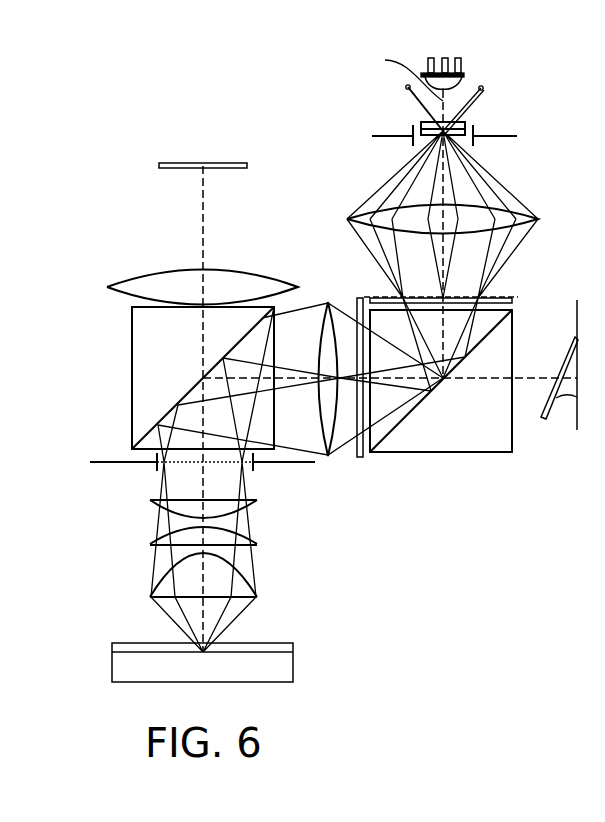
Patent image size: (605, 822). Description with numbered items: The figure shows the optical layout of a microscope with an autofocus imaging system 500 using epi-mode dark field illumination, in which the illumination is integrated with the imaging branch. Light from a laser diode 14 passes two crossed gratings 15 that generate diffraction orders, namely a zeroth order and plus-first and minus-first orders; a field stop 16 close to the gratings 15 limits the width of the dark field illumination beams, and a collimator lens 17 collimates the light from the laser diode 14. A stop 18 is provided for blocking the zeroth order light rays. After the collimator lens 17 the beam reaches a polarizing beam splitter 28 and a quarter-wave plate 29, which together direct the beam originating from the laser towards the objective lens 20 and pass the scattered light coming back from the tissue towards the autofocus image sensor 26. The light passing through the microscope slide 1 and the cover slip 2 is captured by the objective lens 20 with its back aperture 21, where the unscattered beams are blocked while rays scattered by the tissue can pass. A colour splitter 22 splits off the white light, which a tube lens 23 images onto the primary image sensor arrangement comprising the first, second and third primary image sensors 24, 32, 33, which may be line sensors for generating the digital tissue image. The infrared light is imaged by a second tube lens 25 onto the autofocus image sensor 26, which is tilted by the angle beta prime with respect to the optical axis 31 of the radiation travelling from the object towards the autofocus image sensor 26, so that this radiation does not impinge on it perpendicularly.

The microscope slide 1 is at (175, 672).
The cover slip 2 is at (112, 647).
The laser diode 14 is at (430, 58).
The two crossed gratings 15 is at (466, 121).
The field stop 16 is at (502, 136).
The collimator lens 17 is at (534, 217).
The stop for blocking 0th order light rays 18 is at (465, 297).
The objective lens 20 is at (167, 507).
The back aperture 21 is at (124, 466).
The colour splitter 22 is at (132, 340).
The tube lens 23 is at (133, 281).
The first primary image sensor 24 is at (160, 163).
The tube lens 25 is at (326, 457).
The autofocus image sensor 26 is at (553, 418).
The beam splitter 28 is at (482, 438).
The quarter-wave plate 29 is at (362, 457).
The optical axis 31 is at (497, 374).
The second primary image sensor 32 is at (158, 132).
The third primary image sensor 33 is at (158, 132).
The autofocus imaging system 500 is at (70, 590).